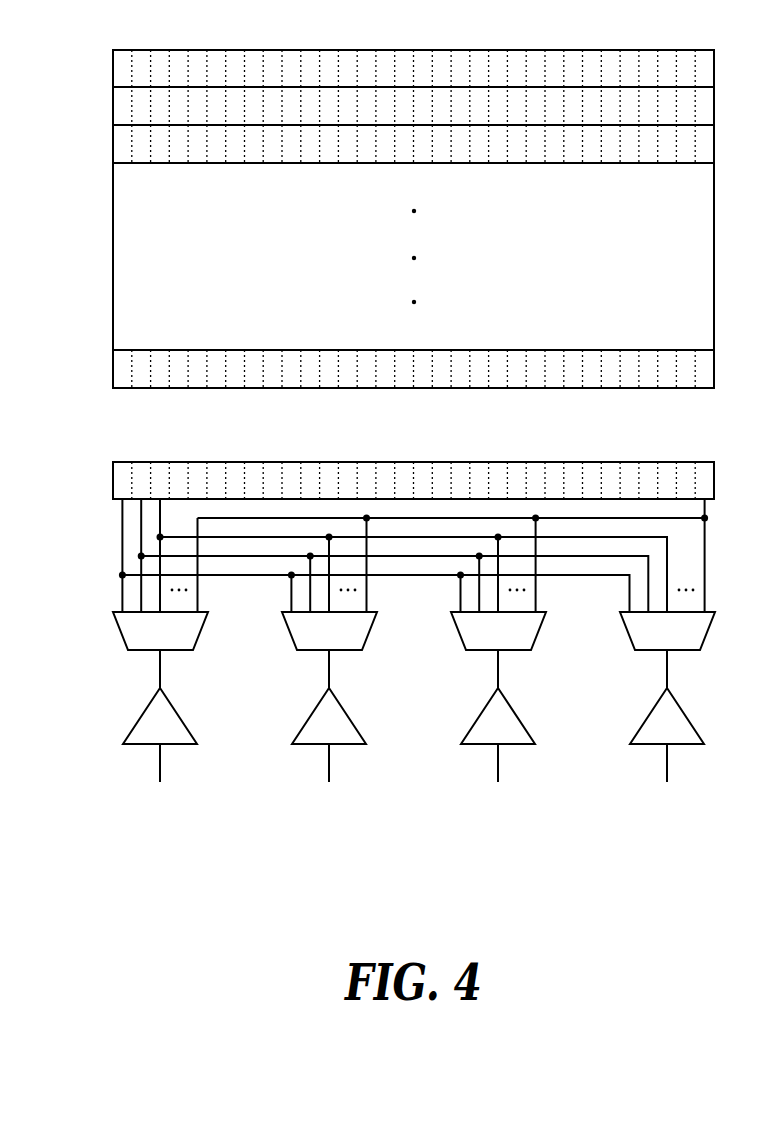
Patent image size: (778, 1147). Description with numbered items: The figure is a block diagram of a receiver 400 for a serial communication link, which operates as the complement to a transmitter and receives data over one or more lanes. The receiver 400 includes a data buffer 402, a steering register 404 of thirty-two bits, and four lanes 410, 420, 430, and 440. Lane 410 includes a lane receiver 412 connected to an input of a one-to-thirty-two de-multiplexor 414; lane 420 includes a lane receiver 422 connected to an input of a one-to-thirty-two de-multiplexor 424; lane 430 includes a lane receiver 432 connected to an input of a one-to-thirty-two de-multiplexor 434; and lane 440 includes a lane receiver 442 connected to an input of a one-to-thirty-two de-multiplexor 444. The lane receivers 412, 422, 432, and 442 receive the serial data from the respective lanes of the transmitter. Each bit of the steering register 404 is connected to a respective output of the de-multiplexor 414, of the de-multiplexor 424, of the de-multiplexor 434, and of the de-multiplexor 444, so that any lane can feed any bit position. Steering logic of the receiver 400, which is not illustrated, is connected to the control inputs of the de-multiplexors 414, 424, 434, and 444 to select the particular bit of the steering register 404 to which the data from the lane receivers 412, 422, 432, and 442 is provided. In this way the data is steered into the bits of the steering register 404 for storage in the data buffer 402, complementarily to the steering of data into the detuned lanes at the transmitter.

The receiver 400 is at (60, 925).
The data buffer 402 is at (122, 50).
The steering register 404 is at (120, 462).
The lane 410 is at (145, 830).
The lane receiver 412 is at (144, 712).
The 1-to-32 de-multiplexor 414 is at (120, 630).
The lane 420 is at (314, 830).
The lane receiver 422 is at (313, 712).
The 1-to-32 de-multiplexor 424 is at (289, 630).
The lane 430 is at (483, 830).
The lane receiver 432 is at (482, 712).
The 1-to-32 de-multiplexor 434 is at (458, 630).
The lane 440 is at (652, 830).
The lane receiver 442 is at (651, 712).
The 1-to-32 de-multiplexor 444 is at (627, 630).